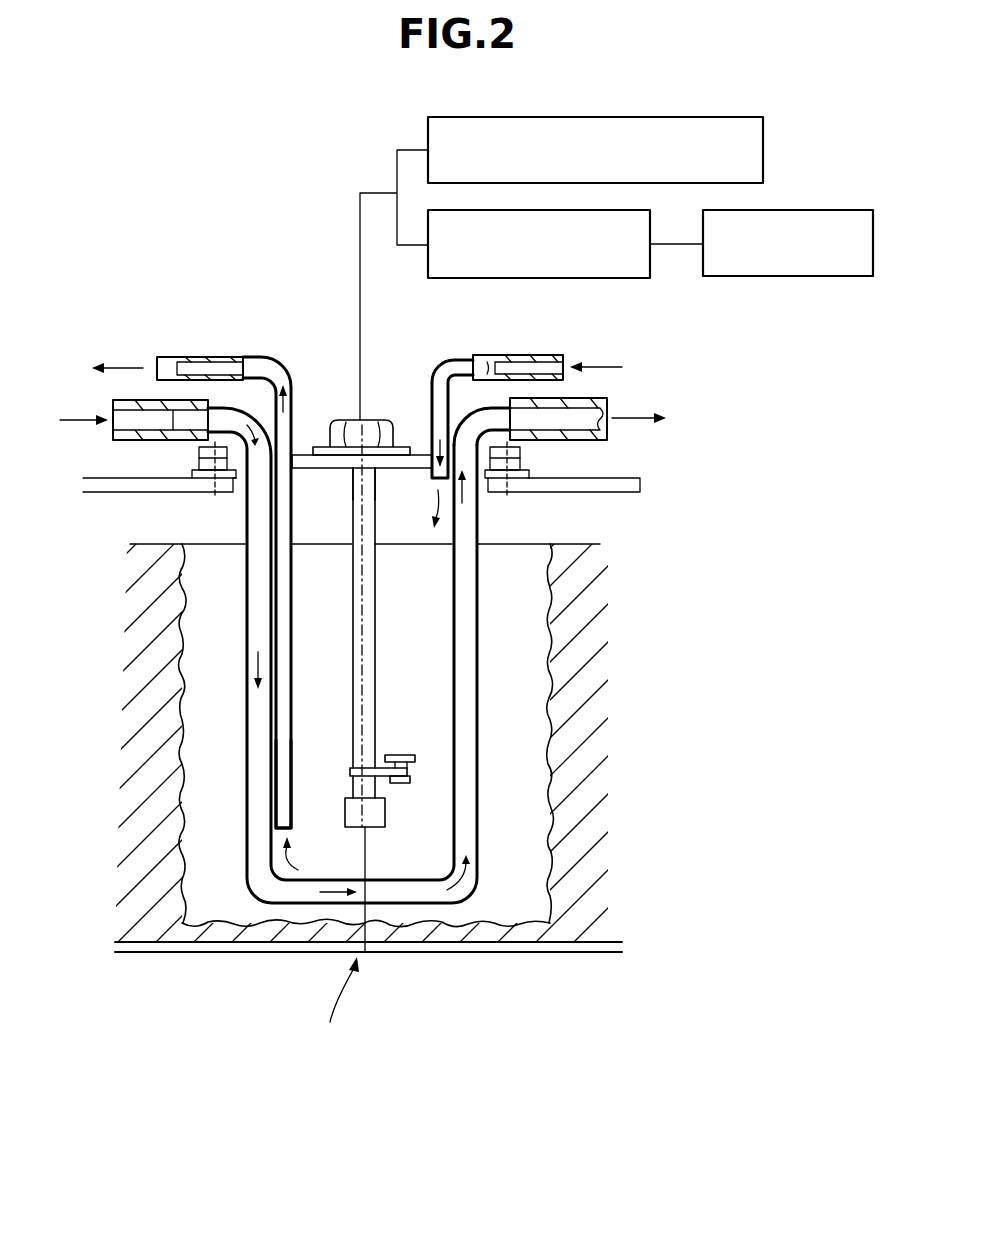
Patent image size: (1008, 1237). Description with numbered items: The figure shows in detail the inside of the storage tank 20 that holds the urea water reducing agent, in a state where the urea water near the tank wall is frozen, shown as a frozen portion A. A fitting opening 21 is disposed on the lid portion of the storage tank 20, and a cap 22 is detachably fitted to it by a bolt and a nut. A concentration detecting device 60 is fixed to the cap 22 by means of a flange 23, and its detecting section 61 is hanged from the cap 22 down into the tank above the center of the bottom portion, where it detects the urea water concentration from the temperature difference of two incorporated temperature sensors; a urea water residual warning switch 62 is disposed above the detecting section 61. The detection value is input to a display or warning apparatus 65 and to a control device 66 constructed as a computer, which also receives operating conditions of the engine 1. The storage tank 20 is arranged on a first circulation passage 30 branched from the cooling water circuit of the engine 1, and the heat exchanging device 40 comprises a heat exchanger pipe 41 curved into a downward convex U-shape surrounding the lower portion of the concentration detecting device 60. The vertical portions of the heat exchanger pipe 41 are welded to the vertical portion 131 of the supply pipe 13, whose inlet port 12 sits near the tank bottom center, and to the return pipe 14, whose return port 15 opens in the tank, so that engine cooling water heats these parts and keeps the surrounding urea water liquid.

The engine 1 is at (833, 208).
The inlet port 12 is at (285, 818).
The supply pipe 13 is at (183, 358).
The return pipe 14 is at (537, 357).
The return port 15 is at (430, 462).
The storage tank 20 is at (335, 1004).
The fitting opening 21 is at (333, 503).
The cap 22 is at (337, 419).
The flange 23 is at (377, 432).
The first circulation passage 30 is at (610, 412).
The heat exchanging device 40 is at (236, 599).
The heat exchanger pipe 41 is at (268, 708).
The concentration detecting device 60 is at (376, 653).
The detecting section 61 is at (386, 818).
The urea water residual warning switch 62 is at (409, 772).
The display or warning apparatus 65 is at (763, 135).
The control device 66 is at (625, 278).
The vertical portion 131 is at (304, 768).
The frozen portion A is at (558, 924).